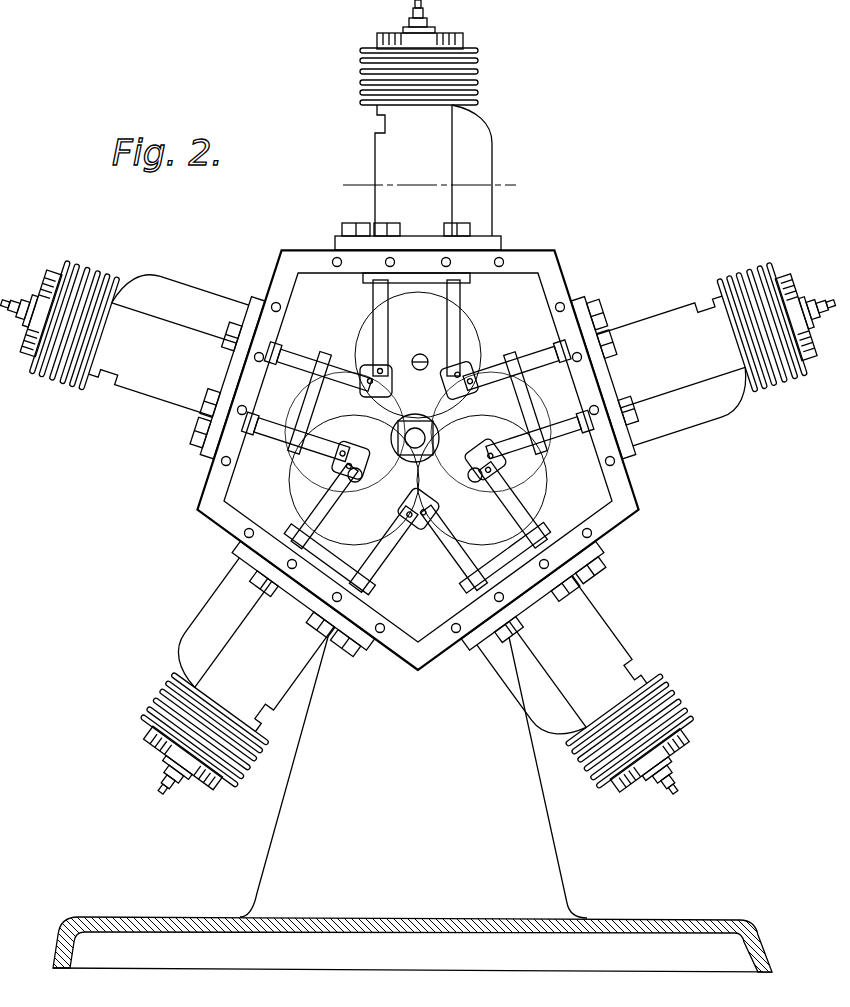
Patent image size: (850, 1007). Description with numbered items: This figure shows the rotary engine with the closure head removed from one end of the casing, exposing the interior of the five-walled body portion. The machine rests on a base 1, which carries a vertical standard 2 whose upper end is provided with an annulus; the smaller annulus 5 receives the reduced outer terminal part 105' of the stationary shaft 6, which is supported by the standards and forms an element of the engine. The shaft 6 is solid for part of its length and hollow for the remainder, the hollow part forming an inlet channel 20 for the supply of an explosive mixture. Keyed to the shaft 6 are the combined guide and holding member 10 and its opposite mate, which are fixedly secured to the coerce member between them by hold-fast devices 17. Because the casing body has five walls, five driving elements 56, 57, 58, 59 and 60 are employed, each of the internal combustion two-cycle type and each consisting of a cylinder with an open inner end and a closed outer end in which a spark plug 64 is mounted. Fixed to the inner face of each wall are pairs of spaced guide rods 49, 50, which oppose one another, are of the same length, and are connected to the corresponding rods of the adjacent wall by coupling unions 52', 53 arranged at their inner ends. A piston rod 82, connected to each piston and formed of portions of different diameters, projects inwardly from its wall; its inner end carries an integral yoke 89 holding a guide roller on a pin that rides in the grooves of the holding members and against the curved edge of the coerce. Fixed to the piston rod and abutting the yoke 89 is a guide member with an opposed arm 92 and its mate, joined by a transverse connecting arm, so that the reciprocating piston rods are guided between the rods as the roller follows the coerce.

The base 1 is at (618, 923).
The vertical standard 2 is at (545, 870).
The annulus 5 is at (429, 185).
The stationary shaft 6 is at (270, 450).
The combined guide and holding member 10 is at (317, 482).
The hold-fast device 17 is at (417, 356).
The inlet channel 20 is at (430, 438).
The guide rod 49 is at (380, 297).
The guide rod 50 is at (308, 364).
The coupling union 52' is at (478, 362).
The coupling union 53 is at (478, 453).
The driving element 56 is at (469, 38).
The driving element 57 is at (63, 267).
The driving element 58 is at (157, 748).
The driving element 59 is at (630, 780).
The driving element 60 is at (802, 368).
The spark plug 64 is at (426, 13).
The piston rod 82 is at (278, 398).
The yoke 89 is at (412, 287).
The arm 92 is at (414, 287).
The reduced outer terminal part of shaft 105' is at (415, 419).